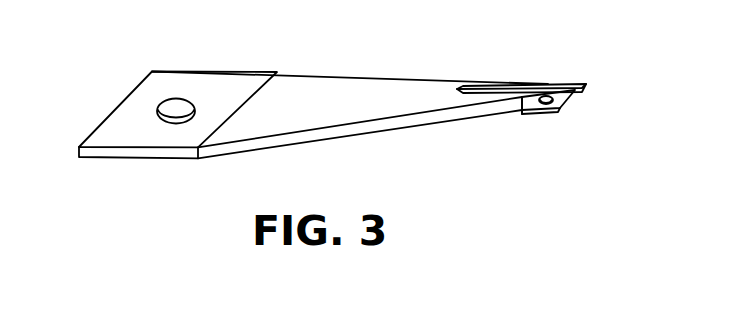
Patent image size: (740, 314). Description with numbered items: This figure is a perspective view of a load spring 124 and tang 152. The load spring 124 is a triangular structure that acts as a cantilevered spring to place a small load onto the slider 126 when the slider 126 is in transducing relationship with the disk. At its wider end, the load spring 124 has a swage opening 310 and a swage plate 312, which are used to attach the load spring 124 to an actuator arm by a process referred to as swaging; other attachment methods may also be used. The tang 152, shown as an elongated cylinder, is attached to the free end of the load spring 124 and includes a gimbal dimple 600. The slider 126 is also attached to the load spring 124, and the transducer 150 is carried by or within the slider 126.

The swage opening 310 is at (158, 101).
The swage plate 312 is at (201, 77).
The load spring 124 is at (363, 131).
The slider 126 is at (535, 113).
The transducer 150 is at (573, 97).
The tang 152 is at (573, 88).
The gimbal dimple 600 is at (550, 95).